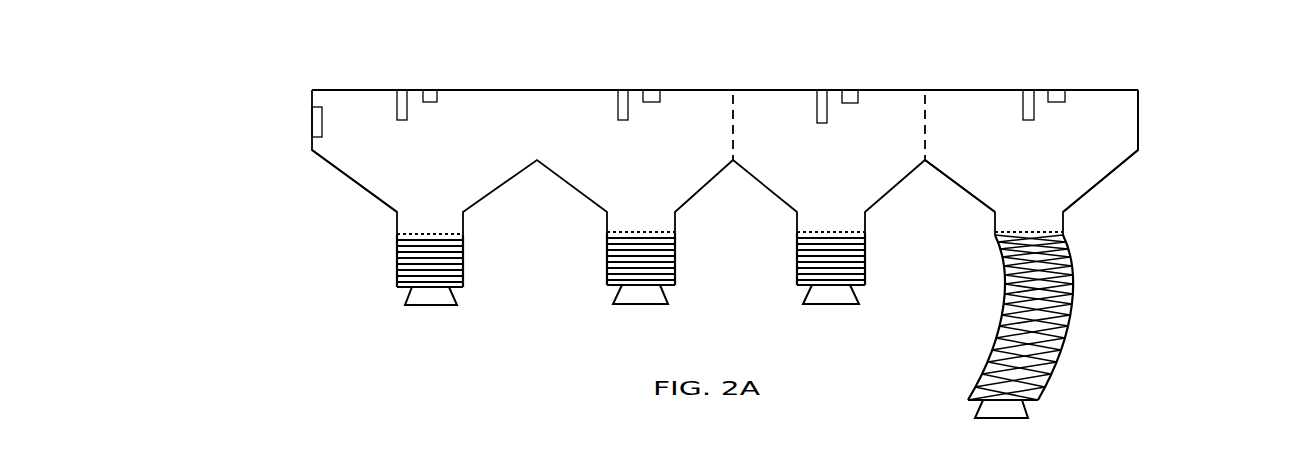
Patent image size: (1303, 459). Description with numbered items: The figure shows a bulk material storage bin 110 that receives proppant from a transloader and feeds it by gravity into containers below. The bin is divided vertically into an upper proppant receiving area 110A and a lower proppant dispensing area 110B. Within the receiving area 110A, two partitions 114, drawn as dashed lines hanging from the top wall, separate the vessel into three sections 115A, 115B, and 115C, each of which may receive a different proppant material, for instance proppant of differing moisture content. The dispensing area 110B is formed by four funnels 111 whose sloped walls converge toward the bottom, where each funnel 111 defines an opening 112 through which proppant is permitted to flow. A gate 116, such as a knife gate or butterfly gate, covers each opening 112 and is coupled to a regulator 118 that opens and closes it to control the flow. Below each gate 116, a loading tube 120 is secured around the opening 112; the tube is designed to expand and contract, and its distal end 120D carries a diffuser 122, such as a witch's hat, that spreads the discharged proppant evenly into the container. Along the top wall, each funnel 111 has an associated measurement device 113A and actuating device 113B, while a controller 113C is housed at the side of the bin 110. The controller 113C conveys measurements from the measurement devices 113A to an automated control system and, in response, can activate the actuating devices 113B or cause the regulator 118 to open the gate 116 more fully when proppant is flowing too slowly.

The bulk material storage bin 110 is at (212, 143).
The proppant receiving area 110A is at (1166, 108).
The proppant dispensing area 110B is at (1164, 193).
The funnel 111 is at (339, 194).
The opening 112 is at (456, 248).
The measurement device 113A is at (395, 98).
The actuating device 113B is at (438, 98).
The controller 113C is at (312, 117).
The partition 114 is at (733, 118).
The section 115A is at (520, 84).
The section 115B is at (895, 82).
The section 115C is at (1096, 82).
The gate 116 is at (463, 236).
The regulator 118 is at (398, 455).
The loading tube 120 is at (397, 266).
The distal end 120D is at (1050, 398).
The diffuser 122 is at (417, 305).